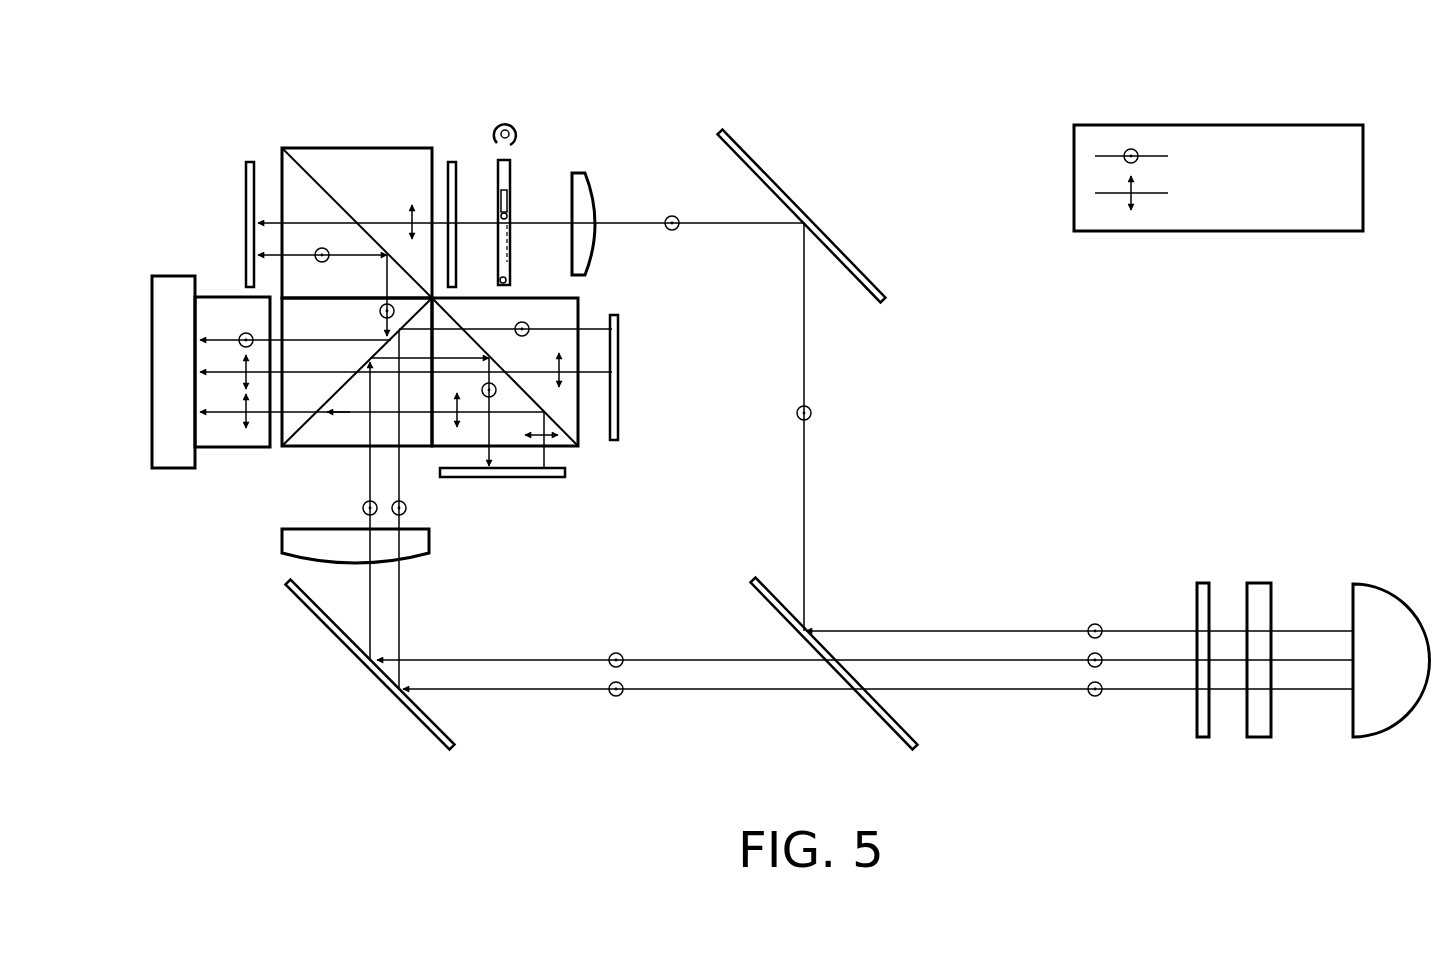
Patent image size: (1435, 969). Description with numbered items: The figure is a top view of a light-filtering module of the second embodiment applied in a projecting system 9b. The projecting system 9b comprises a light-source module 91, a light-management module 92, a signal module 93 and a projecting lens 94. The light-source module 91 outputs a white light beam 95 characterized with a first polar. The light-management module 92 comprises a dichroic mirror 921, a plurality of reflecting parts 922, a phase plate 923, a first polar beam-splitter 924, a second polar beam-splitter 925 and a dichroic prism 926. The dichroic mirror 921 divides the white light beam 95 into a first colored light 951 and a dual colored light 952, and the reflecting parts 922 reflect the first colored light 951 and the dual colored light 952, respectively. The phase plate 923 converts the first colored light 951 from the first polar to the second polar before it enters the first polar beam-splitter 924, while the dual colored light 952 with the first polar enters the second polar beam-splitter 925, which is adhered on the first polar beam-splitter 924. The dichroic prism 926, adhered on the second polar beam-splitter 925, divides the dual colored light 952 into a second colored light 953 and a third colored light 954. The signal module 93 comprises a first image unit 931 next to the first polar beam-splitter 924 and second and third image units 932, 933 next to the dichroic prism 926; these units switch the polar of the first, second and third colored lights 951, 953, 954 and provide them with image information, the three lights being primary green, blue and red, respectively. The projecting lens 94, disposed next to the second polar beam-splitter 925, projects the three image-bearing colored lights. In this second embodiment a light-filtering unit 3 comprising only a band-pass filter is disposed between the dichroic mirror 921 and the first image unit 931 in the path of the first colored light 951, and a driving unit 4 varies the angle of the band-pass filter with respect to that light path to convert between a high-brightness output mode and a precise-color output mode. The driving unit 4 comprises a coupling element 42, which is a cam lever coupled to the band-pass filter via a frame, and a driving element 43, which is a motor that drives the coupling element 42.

The projecting system 9b is at (1040, 381).
The light-source module 91 is at (1362, 583).
The light-management module 92 is at (772, 138).
The dichroic mirror 921 is at (878, 722).
The reflecting parts 922 is at (866, 270).
The signal module 93 is at (190, 136).
The first image unit 931 is at (249, 162).
The phase plate 923 is at (452, 162).
The first polar beam-splitter 924 is at (355, 148).
The second polar beam-splitter 925 is at (305, 448).
The dichroic prism 926 is at (582, 432).
The second image unit 932 is at (553, 478).
The third image unit 933 is at (619, 375).
The projecting lens 94 is at (173, 275).
The white light beam 95 is at (985, 630).
The first colored light 951 is at (637, 222).
The dual colored light 952 is at (685, 691).
The second colored light 953 is at (489, 456).
The third colored light 954 is at (582, 312).
The light-filtering unit 3 is at (560, 153).
The driving unit 4 is at (508, 108).
The coupling element 42 is at (514, 126).
The driving element 43 is at (500, 124).